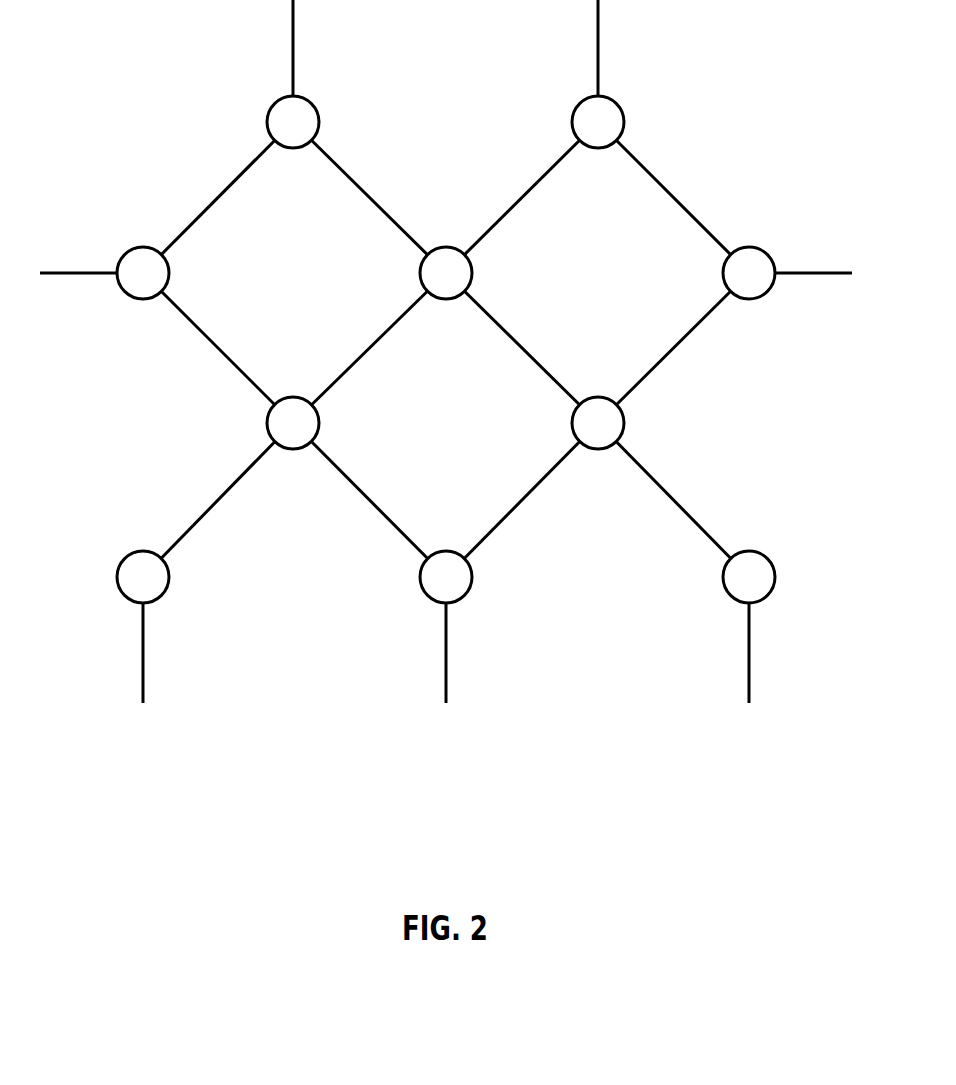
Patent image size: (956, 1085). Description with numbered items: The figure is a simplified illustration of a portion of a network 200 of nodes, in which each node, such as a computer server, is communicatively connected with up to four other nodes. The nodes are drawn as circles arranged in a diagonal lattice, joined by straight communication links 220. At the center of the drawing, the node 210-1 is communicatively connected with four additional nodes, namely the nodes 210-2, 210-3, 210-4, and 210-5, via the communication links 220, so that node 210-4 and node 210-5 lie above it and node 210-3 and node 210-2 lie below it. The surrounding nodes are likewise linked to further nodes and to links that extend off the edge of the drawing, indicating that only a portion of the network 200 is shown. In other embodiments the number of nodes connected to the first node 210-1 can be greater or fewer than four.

The network 200 is at (189, 803).
The node 210-1 is at (472, 271).
The node 210-2 is at (623, 422).
The node 210-3 is at (320, 422).
The node 210-4 is at (318, 121).
The node 210-5 is at (623, 121).
The communication links 220 is at (510, 209).